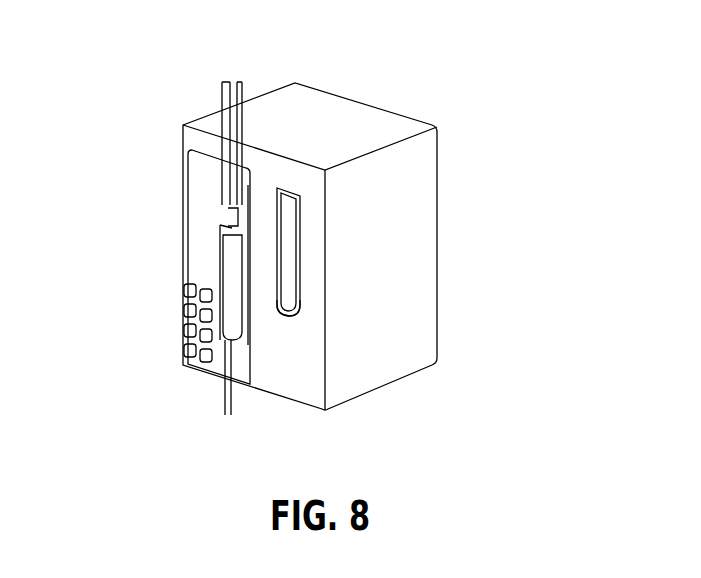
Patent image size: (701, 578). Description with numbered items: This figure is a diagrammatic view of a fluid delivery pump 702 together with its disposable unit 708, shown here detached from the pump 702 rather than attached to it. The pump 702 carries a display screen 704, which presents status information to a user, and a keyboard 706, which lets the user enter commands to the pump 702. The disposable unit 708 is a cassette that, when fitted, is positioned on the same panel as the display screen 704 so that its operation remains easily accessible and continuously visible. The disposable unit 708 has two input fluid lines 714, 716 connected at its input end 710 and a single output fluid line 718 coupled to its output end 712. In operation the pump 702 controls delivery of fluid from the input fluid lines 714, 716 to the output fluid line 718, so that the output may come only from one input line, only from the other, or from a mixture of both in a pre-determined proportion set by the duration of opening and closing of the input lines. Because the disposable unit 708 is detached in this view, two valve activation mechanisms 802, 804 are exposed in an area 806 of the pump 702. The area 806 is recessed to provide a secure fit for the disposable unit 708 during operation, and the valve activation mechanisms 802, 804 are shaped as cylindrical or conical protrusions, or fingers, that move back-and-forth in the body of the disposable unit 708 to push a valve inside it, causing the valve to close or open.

The fluid delivery pump 702 is at (298, 103).
The display screen 704 is at (193, 240).
The keyboard 706 is at (205, 320).
The disposable unit 708 is at (232, 270).
The input end 710 is at (232, 221).
The output end 712 is at (222, 330).
The input fluid line 714 is at (218, 105).
The input fluid line 716 is at (247, 90).
The output fluid line 718 is at (228, 398).
The valve activation mechanism 802 is at (282, 193).
The valve activation mechanism 804 is at (298, 200).
The area 806 is at (280, 287).